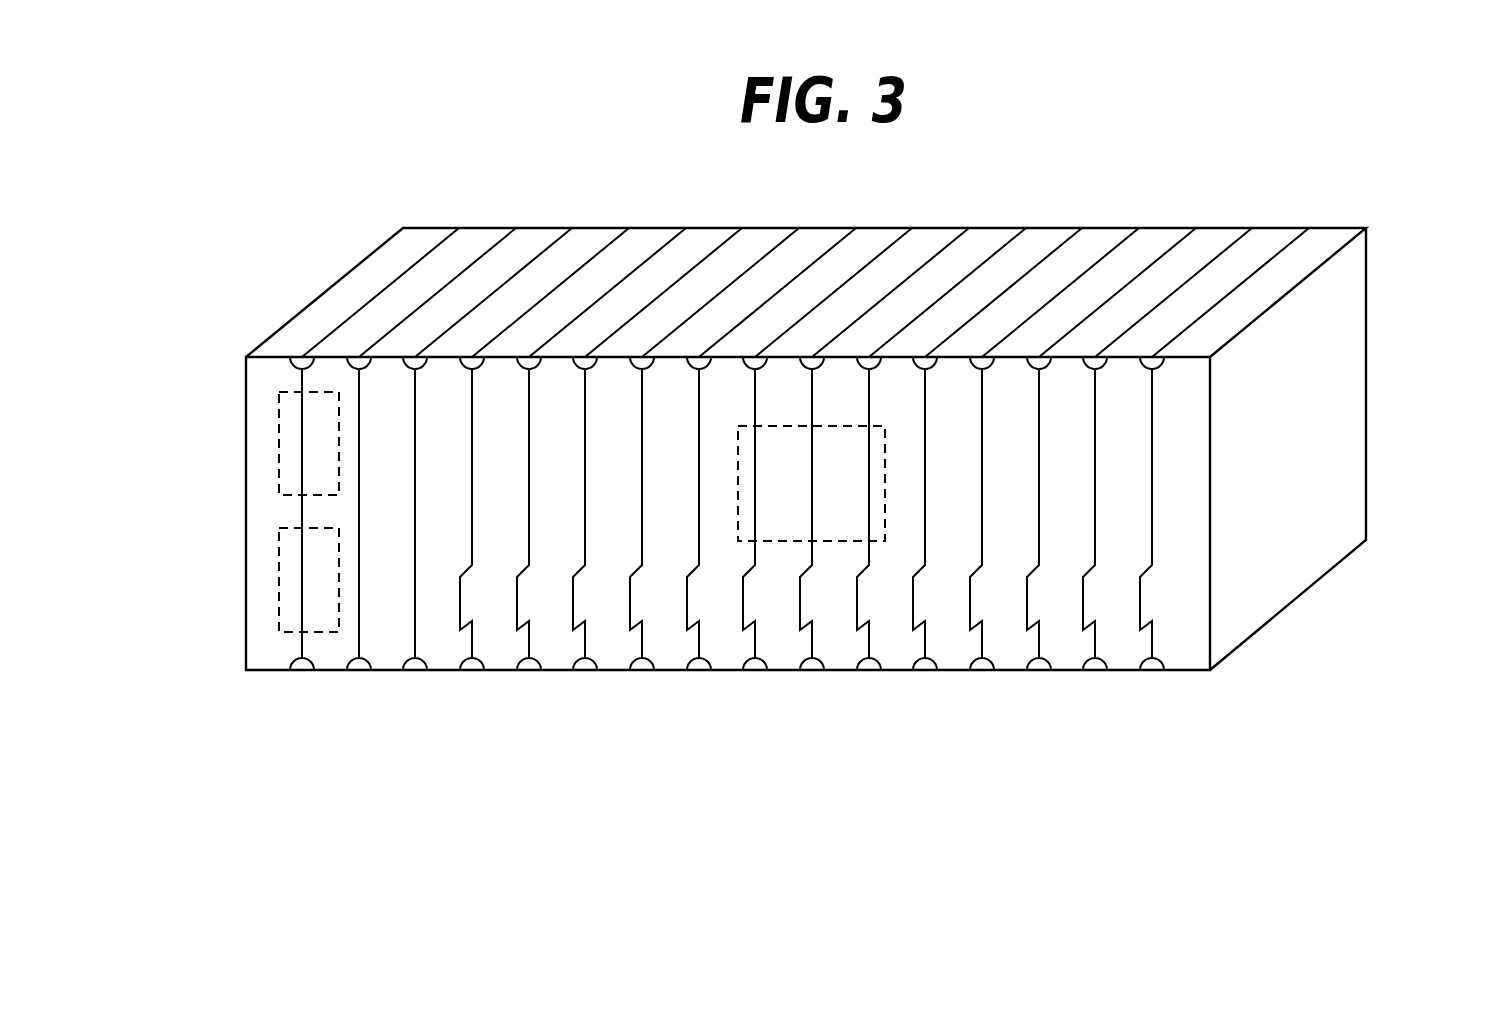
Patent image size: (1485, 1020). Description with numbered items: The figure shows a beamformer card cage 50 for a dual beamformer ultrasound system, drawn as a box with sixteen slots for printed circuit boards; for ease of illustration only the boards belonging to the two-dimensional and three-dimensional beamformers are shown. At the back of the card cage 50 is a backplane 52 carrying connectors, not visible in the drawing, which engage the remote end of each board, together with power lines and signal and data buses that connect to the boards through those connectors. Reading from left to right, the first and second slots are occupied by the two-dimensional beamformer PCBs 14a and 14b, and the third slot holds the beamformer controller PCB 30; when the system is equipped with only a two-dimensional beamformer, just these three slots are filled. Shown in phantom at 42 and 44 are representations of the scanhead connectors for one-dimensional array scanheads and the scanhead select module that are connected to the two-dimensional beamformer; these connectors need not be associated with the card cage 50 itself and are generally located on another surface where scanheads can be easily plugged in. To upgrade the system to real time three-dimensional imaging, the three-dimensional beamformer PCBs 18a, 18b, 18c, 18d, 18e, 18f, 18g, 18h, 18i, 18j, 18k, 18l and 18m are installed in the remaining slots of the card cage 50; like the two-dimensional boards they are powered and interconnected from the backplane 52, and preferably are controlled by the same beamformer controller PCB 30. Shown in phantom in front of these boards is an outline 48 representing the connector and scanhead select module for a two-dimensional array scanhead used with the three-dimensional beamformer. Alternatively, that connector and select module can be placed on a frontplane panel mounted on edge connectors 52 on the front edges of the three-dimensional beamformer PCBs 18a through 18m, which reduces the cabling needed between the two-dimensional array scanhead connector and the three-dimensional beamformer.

The card cage 50 is at (1400, 345).
The backplane 52 is at (658, 227).
The 2D beamformer PCB 14a is at (302, 643).
The 2D beamformer PCB 14b is at (359, 643).
The beamformer controller PCB 30 is at (415, 643).
The scanhead connector 42 is at (279, 435).
The scanhead connector 44 is at (279, 573).
The outline of connector and scanhead select module 48 is at (885, 508).
The 3D beamformer PCB 18a is at (474, 387).
The 3D beamformer PCB 18b is at (531, 387).
The 3D beamformer PCB 18c is at (587, 387).
The 3D beamformer PCB 18d is at (644, 387).
The 3D beamformer PCB 18e is at (701, 377).
The 3D beamformer PCB 18f is at (757, 377).
The 3D beamformer PCB 18g is at (814, 377).
The 3D beamformer PCB 18h is at (871, 377).
The 3D beamformer PCB 18i is at (927, 387).
The 3D beamformer PCB 18j is at (984, 387).
The 3D beamformer PCB 18k is at (1041, 387).
The 3D beamformer PCB 18l is at (1097, 387).
The 3D beamformer PCB 18m is at (1154, 387).